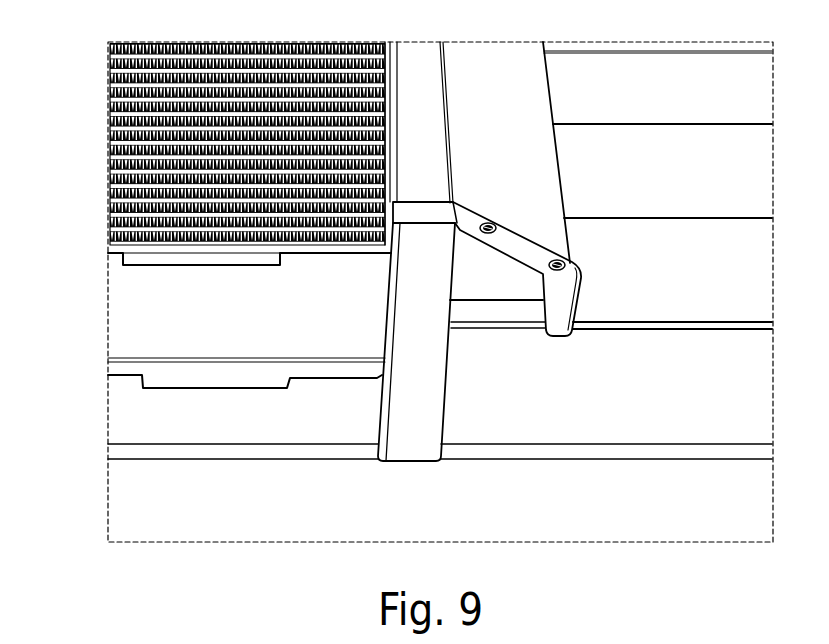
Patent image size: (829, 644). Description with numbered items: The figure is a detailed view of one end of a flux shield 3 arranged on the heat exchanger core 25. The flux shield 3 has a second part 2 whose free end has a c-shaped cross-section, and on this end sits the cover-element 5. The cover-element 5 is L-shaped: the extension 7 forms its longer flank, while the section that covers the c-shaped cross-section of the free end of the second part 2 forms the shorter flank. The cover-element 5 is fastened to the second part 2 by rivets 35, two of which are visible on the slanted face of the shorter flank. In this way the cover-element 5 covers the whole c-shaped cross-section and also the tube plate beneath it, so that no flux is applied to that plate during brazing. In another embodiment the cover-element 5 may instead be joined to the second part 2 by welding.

The second part 2 is at (535, 165).
The flux shield 3 is at (551, 80).
The cover-element 5 is at (428, 257).
The extension 7 is at (425, 368).
The heat exchanger core 25 is at (150, 140).
The rivets 35 is at (572, 262).